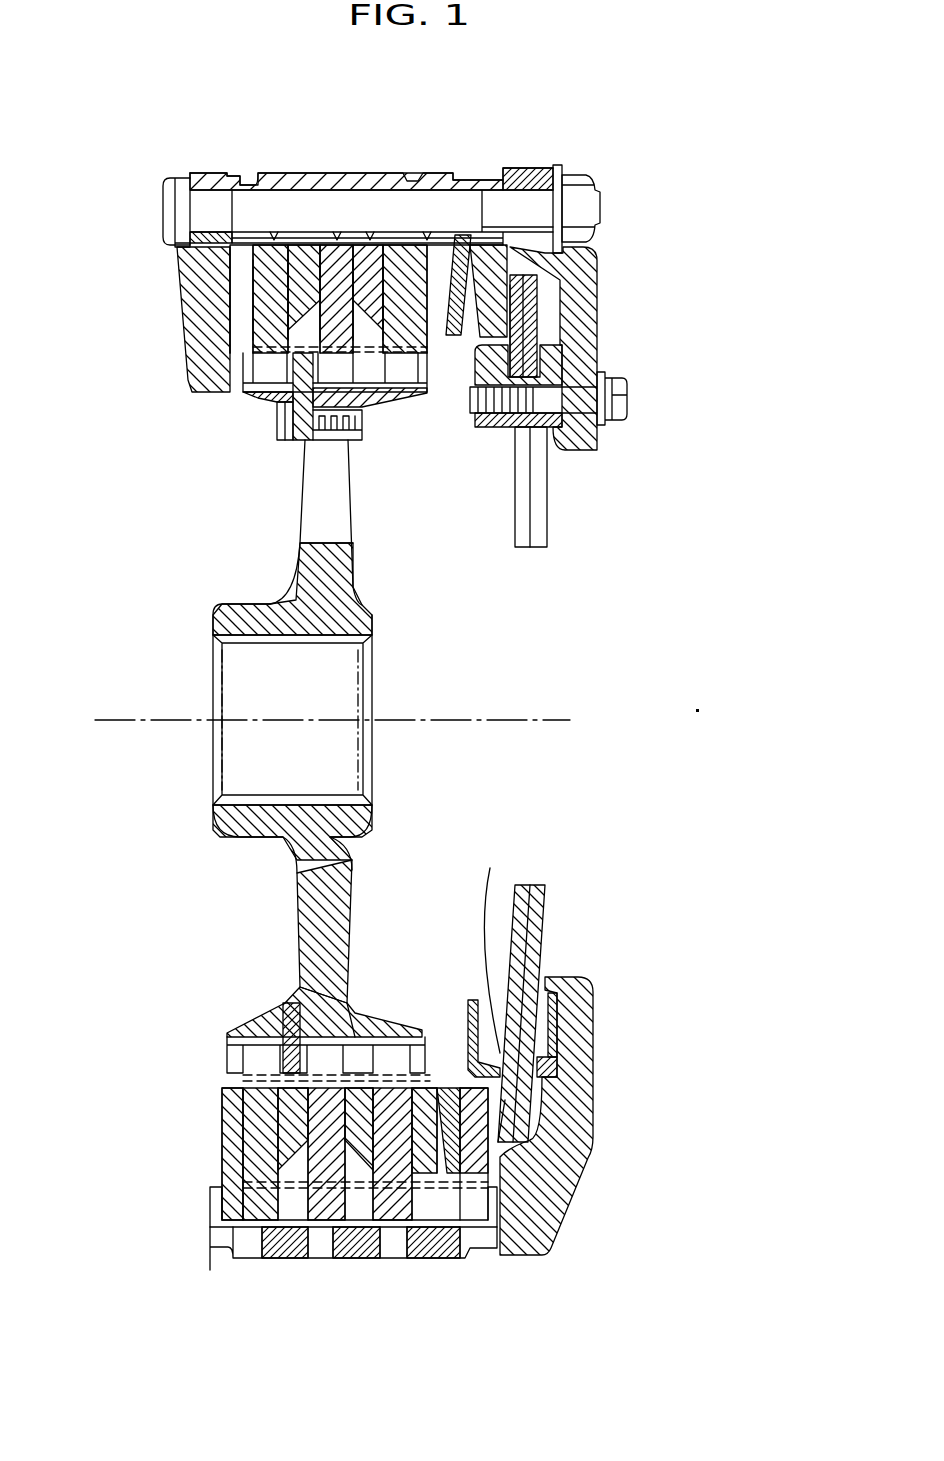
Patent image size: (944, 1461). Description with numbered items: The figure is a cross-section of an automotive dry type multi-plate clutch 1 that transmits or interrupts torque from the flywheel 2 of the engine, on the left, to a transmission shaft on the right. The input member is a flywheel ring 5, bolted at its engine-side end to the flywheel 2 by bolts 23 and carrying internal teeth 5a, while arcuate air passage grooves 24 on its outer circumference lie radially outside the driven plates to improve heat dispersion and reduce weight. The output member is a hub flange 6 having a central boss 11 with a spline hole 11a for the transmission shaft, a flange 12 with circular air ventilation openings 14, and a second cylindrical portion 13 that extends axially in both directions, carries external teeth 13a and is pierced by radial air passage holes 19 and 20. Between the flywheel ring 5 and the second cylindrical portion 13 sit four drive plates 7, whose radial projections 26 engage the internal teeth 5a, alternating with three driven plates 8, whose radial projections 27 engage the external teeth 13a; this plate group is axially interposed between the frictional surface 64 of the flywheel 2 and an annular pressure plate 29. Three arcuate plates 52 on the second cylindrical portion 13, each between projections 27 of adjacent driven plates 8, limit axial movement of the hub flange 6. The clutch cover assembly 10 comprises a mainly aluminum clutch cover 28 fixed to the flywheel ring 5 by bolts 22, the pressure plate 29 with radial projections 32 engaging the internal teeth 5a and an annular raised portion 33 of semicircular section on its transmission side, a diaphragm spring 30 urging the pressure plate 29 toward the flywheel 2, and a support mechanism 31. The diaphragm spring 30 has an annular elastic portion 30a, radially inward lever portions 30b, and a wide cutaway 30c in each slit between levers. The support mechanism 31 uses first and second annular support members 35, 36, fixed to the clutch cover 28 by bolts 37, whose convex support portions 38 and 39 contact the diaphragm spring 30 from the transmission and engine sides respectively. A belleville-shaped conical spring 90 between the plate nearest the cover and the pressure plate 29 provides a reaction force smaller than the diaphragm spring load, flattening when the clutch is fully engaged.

The multi-plate clutch 1 is at (637, 164).
The flywheel 2 is at (182, 276).
The flywheel ring 5 is at (418, 180).
The internal teeth 5a is at (257, 1212).
The hub flange 6 is at (336, 678).
The drive plates 7 is at (413, 350).
The driven plates 8 is at (337, 240).
The clutch cover assembly 10 is at (549, 401).
The boss 11 is at (240, 618).
The spline hole 11a is at (312, 643).
The flange 12 is at (290, 910).
The second cylindrical portion 13 is at (250, 1010).
The external teeth 13a is at (476, 287).
The air ventilation openings 14 is at (335, 490).
The air passage holes 19 is at (353, 1020).
The air passage holes 20 is at (290, 1022).
The bolts 22 is at (600, 209).
The bolts 23 is at (176, 211).
The air passage grooves 24 is at (310, 1238).
The radial projections 26 is at (295, 1200).
The radial projections 27 is at (262, 1063).
The clutch cover 28 is at (577, 334).
The pressure plate 29 is at (500, 1158).
The diaphragm spring 30 is at (545, 1026).
The annular elastic portion 30a is at (537, 322).
The lever portions 30b is at (537, 882).
The cutaway 30c is at (541, 432).
The support mechanism 31 is at (457, 420).
The radial projections 32 is at (500, 1197).
The annular raised portion 33 is at (492, 1115).
The first support annular member 35 is at (560, 1030).
The second support annular member 36 is at (463, 1022).
The bolts 37 is at (615, 397).
The support portion 38 is at (548, 1068).
The support portion 39 is at (485, 943).
The arcuate plates 52 is at (273, 363).
The frictional surface 64 is at (256, 255).
The conical spring 90 is at (450, 280).